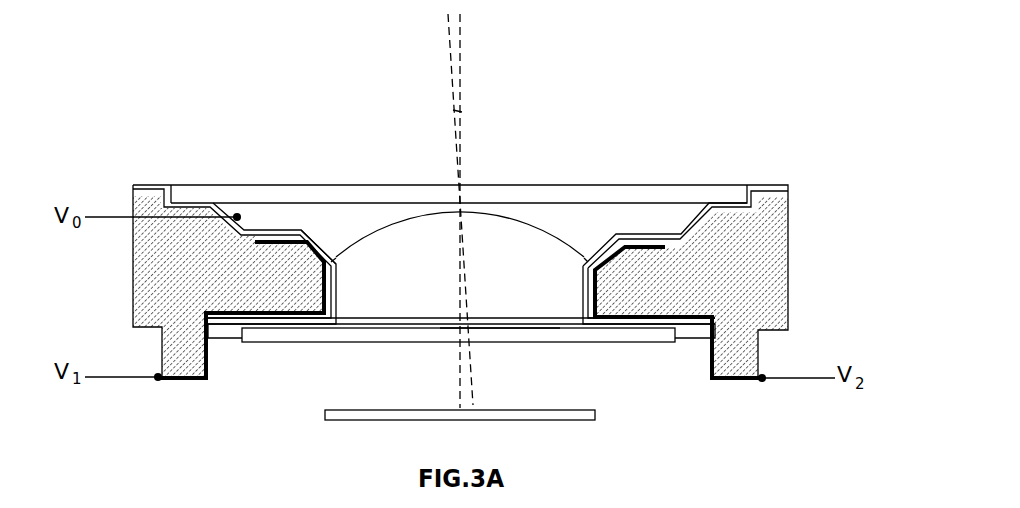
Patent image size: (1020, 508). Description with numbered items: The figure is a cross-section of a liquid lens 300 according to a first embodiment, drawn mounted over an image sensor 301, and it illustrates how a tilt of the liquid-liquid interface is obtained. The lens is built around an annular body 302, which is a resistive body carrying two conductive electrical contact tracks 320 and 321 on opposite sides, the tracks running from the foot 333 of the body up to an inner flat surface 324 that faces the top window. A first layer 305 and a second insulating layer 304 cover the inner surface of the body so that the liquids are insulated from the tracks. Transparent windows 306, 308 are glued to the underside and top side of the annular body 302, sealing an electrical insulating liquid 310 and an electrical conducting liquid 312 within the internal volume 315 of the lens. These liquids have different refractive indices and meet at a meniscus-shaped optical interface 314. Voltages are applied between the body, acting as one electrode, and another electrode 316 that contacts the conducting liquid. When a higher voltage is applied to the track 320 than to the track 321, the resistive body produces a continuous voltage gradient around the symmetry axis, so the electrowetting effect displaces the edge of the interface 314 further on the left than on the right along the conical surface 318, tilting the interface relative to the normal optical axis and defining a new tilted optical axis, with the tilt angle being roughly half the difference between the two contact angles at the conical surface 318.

The liquid lens 300 is at (716, 128).
The image sensor 301 is at (540, 416).
The annular body 302 is at (629, 312).
The second insulating layer 304 is at (588, 305).
The first layer 305 is at (583, 277).
The transparent window 306 is at (368, 333).
The transparent window 308 is at (575, 202).
The electrical insulating liquid 310 is at (493, 323).
The electrical conducting liquid 312 is at (645, 212).
The optical interface 314 is at (397, 228).
The internal volume 315 is at (288, 228).
The electrode 316 is at (238, 213).
The conical surface 318 is at (340, 248).
The electrical contact track 320 is at (180, 385).
The electrical contact track 321 is at (738, 388).
The inner flat surface 324 is at (688, 212).
The foot 333 is at (760, 355).